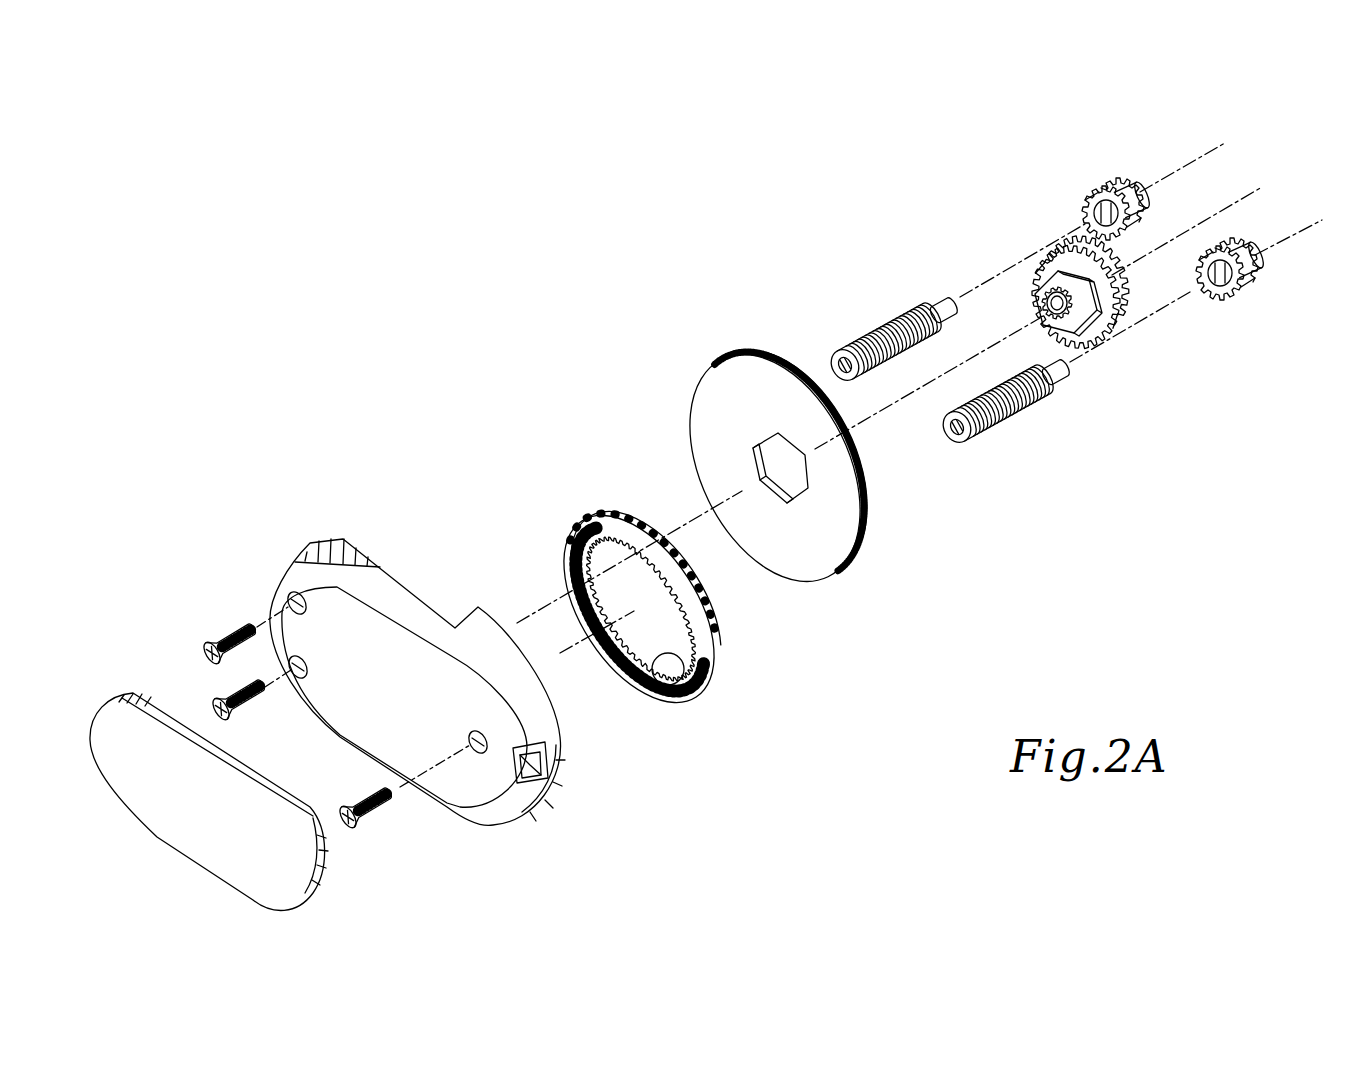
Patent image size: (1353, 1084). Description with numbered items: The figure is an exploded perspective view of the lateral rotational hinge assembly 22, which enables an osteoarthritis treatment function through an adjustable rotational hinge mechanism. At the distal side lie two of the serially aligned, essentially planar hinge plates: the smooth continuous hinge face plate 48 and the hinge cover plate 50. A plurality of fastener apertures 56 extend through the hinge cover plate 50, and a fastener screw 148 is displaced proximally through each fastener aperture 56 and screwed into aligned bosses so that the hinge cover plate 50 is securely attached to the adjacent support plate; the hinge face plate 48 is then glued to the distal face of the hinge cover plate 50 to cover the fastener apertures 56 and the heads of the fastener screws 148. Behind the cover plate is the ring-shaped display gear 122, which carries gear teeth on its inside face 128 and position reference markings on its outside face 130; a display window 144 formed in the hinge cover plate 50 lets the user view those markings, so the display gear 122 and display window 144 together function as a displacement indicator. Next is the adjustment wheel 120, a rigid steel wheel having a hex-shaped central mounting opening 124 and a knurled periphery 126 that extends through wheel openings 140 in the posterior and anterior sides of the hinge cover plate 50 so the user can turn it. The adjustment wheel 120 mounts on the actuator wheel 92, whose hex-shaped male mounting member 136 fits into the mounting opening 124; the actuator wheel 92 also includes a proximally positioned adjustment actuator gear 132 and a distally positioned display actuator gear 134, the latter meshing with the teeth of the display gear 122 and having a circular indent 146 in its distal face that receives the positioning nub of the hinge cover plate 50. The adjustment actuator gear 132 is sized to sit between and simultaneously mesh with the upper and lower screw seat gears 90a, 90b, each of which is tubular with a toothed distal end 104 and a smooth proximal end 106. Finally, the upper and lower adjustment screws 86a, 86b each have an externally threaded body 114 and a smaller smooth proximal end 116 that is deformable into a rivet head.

The lateral rotational hinge assembly 22 is at (592, 272).
The hinge face plate 48 is at (300, 872).
The hinge cover plate 50 is at (333, 553).
The fastener apertures 56 is at (292, 603).
The upper adjustment screw 86a is at (1035, 422).
The lower adjustment screw 86b is at (873, 340).
The upper screw seat gear 90a is at (1232, 258).
The lower screw seat gear 90b is at (1118, 182).
The actuator wheel 92 is at (1095, 335).
The distal end 104 is at (1092, 192).
The proximal end 106 is at (1146, 200).
The externally-threaded body 114 is at (846, 358).
The smooth proximal end 116 is at (941, 310).
The adjustment wheel 120 is at (718, 398).
The display gear 122 is at (612, 517).
The hex-shaped central mounting opening 124 is at (796, 466).
The knurled periphery 126 is at (867, 497).
The inside face 128 is at (668, 692).
The outside face 130 is at (705, 672).
The adjustment actuator gear 132 is at (1120, 305).
The display actuator gear 134 is at (1052, 318).
The hex-shaped male mounting member 136 is at (1048, 270).
The wheel openings 140 is at (408, 587).
The display window 144 is at (528, 760).
The circular indent 146 is at (1050, 299).
The fastener screw 148 is at (232, 637).